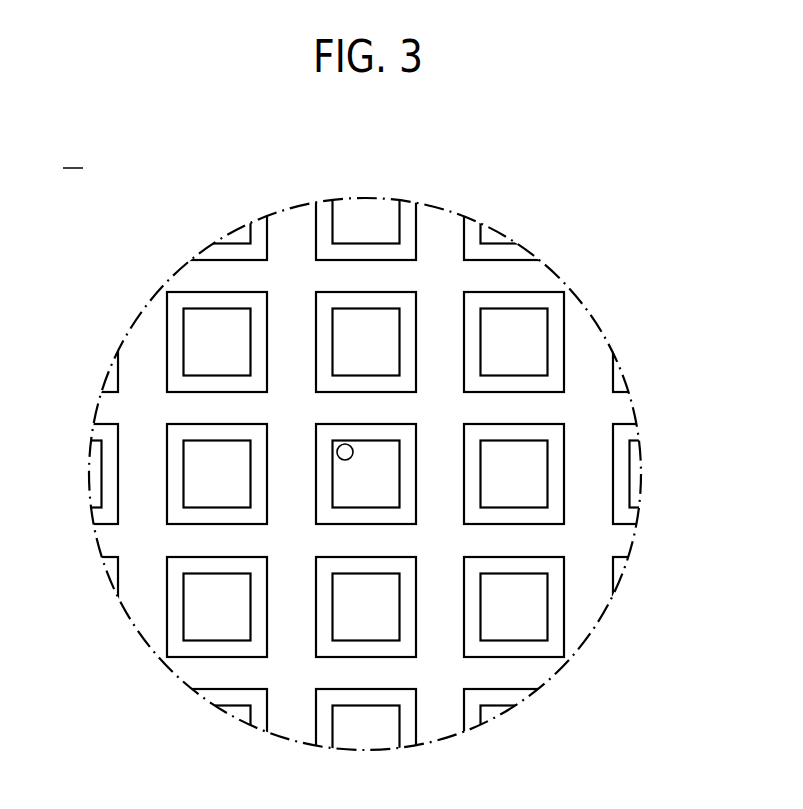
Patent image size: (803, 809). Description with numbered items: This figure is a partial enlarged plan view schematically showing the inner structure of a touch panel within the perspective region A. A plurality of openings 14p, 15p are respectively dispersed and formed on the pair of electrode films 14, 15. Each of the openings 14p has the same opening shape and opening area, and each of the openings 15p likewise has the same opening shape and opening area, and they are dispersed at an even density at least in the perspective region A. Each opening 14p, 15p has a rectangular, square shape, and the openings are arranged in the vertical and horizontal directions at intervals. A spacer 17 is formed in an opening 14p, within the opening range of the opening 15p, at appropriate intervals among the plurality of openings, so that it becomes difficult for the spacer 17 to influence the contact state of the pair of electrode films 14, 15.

The perspective region A is at (73, 156).
The electrode film 14 is at (322, 215).
The electrode film 15 is at (437, 220).
The opening 14p is at (494, 309).
The opening 15p is at (563, 350).
The spacer 17 is at (352, 457).